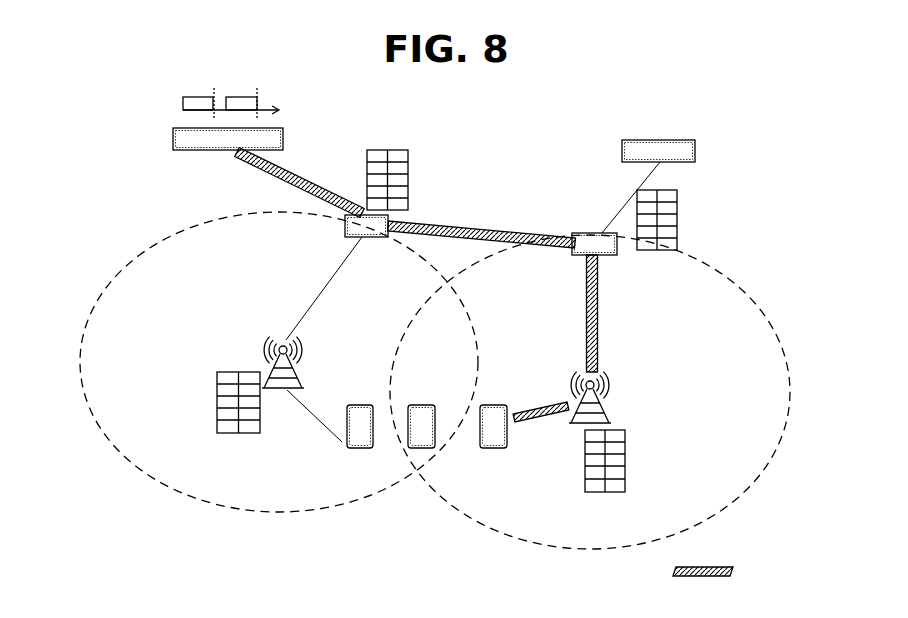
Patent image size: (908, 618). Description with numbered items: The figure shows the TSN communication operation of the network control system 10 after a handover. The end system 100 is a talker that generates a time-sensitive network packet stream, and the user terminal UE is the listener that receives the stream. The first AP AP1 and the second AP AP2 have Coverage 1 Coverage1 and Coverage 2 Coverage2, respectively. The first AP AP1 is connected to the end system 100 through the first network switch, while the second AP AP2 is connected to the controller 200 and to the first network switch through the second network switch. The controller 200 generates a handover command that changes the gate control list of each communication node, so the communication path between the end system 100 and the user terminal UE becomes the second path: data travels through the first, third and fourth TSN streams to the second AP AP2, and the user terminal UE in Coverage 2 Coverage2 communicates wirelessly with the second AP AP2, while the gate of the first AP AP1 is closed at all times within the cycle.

The network control system 10 is at (567, 100).
The end system 100 is at (283, 129).
The controller 200 is at (695, 140).
The first AP AP1 is at (300, 340).
The second AP AP2 is at (611, 387).
The user terminal UE is at (507, 450).
The Coverage 1 Coverage1 is at (112, 440).
The Coverage 2 Coverage2 is at (770, 460).